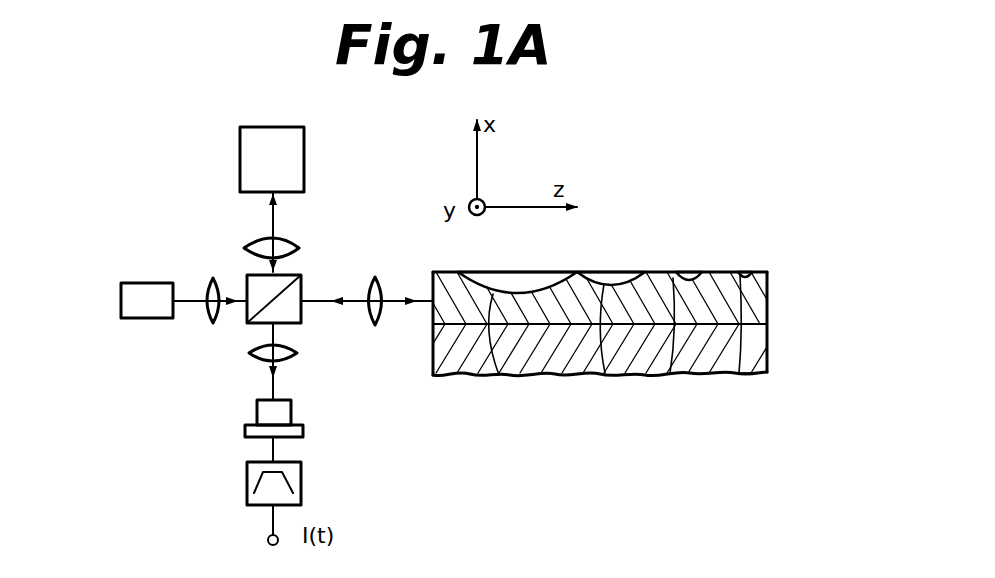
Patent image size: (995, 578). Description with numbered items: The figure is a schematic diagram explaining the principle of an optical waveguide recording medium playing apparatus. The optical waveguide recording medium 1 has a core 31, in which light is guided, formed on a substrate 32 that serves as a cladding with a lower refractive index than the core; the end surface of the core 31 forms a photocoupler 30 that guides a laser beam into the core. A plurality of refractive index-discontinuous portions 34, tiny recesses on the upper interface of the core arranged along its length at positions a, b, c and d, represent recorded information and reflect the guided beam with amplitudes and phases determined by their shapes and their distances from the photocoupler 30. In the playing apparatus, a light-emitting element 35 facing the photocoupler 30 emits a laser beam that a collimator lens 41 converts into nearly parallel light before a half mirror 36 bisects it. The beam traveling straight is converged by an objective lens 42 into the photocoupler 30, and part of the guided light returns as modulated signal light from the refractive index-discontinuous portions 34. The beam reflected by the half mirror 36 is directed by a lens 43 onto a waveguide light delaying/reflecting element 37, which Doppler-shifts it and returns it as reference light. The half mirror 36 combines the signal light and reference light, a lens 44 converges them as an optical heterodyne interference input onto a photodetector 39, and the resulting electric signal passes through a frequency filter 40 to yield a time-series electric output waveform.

The optical waveguide recording medium 1 is at (572, 310).
The photocoupler 30 is at (570, 349).
The core 31 is at (729, 310).
The substrate 32 is at (731, 359).
The refractive index-discontinuous portions 34 is at (499, 375).
The light-emitting element 35 is at (150, 318).
The half mirror 36 is at (260, 325).
The waveguide light delaying/reflecting element 37 is at (304, 170).
The photodetector 39 is at (291, 414).
The frequency filter 40 is at (301, 480).
The collimator lens 41 is at (210, 278).
The objective lens 42 is at (379, 277).
The lens 43 is at (299, 255).
The lens 44 is at (292, 358).